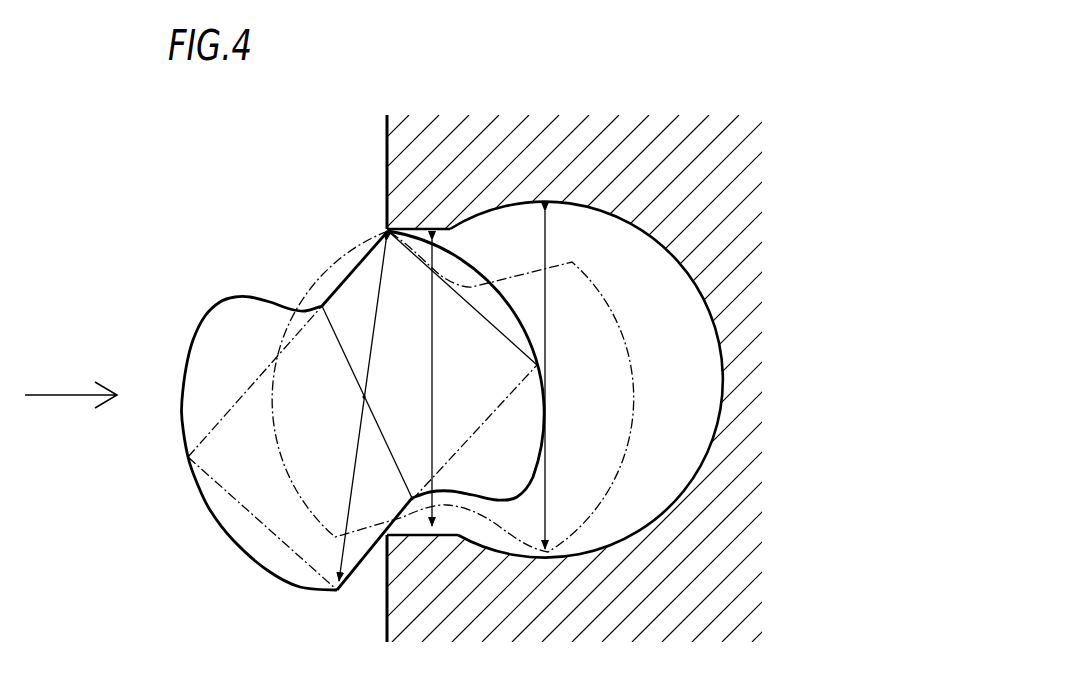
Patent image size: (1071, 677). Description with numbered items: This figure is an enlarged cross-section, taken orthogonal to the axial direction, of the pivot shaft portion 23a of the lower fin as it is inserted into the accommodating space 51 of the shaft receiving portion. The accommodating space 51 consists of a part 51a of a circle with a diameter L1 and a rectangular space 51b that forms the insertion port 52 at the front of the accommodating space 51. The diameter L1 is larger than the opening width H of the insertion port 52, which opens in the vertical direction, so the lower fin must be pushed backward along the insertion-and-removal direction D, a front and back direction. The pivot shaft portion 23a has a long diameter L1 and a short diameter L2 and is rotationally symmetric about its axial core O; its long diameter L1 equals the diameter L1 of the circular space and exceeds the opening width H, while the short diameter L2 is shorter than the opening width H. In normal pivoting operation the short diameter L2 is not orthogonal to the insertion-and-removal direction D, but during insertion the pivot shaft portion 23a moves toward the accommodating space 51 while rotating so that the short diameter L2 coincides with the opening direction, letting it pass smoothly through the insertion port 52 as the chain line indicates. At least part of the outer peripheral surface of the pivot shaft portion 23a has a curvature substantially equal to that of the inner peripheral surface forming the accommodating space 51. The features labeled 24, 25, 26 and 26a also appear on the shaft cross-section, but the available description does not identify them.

The pivot shaft portion 23a is at (289, 304).
The cam base portion 24 is at (197, 489).
The cam lobe portion 25 is at (233, 541).
The cam 26 is at (313, 411).
The cam outer surface 26a is at (182, 421).
The accommodating space 51 is at (535, 378).
The part of circle 51a is at (702, 403).
The rectangular space 51b is at (420, 527).
The insertion port 52 is at (443, 229).
The long diameter L1 is at (382, 273).
The short diameter L2 is at (350, 365).
The opening width H is at (431, 383).
The axial core O is at (364, 397).
The insertion-and-removal direction D is at (45, 393).